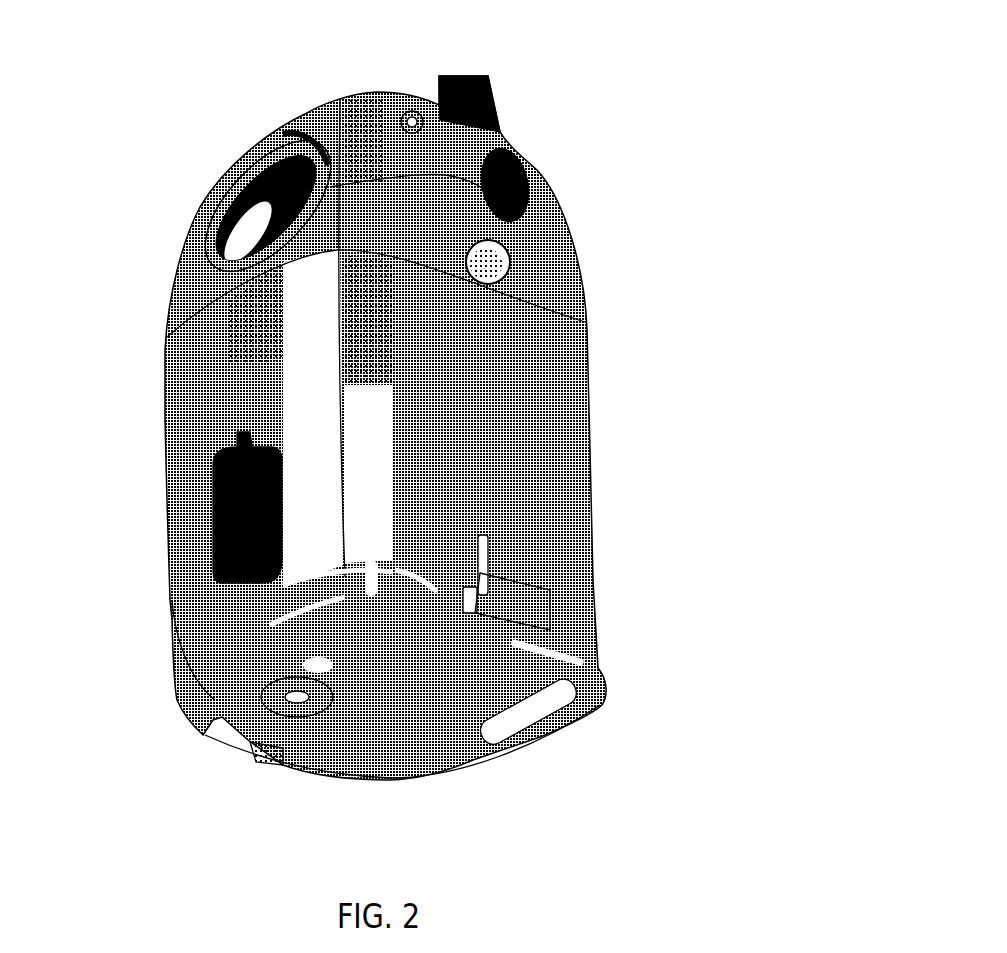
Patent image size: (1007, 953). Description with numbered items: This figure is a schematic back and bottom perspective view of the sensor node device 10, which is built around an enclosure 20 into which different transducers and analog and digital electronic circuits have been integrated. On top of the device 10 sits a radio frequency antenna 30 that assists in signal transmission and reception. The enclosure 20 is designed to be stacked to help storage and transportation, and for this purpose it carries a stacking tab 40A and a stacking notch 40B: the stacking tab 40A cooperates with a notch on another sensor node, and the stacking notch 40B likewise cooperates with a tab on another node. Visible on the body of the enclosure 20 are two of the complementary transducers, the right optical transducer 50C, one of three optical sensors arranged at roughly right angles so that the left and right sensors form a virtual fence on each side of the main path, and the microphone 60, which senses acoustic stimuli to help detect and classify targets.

The device 10 is at (385, 391).
The enclosure 20 is at (562, 747).
The radio frequency (RF) antenna 30 is at (500, 108).
The stacking tab 40A is at (528, 582).
The stacking notch 40B is at (242, 738).
The right optical transducer 50C is at (222, 158).
The microphone 60 is at (503, 286).